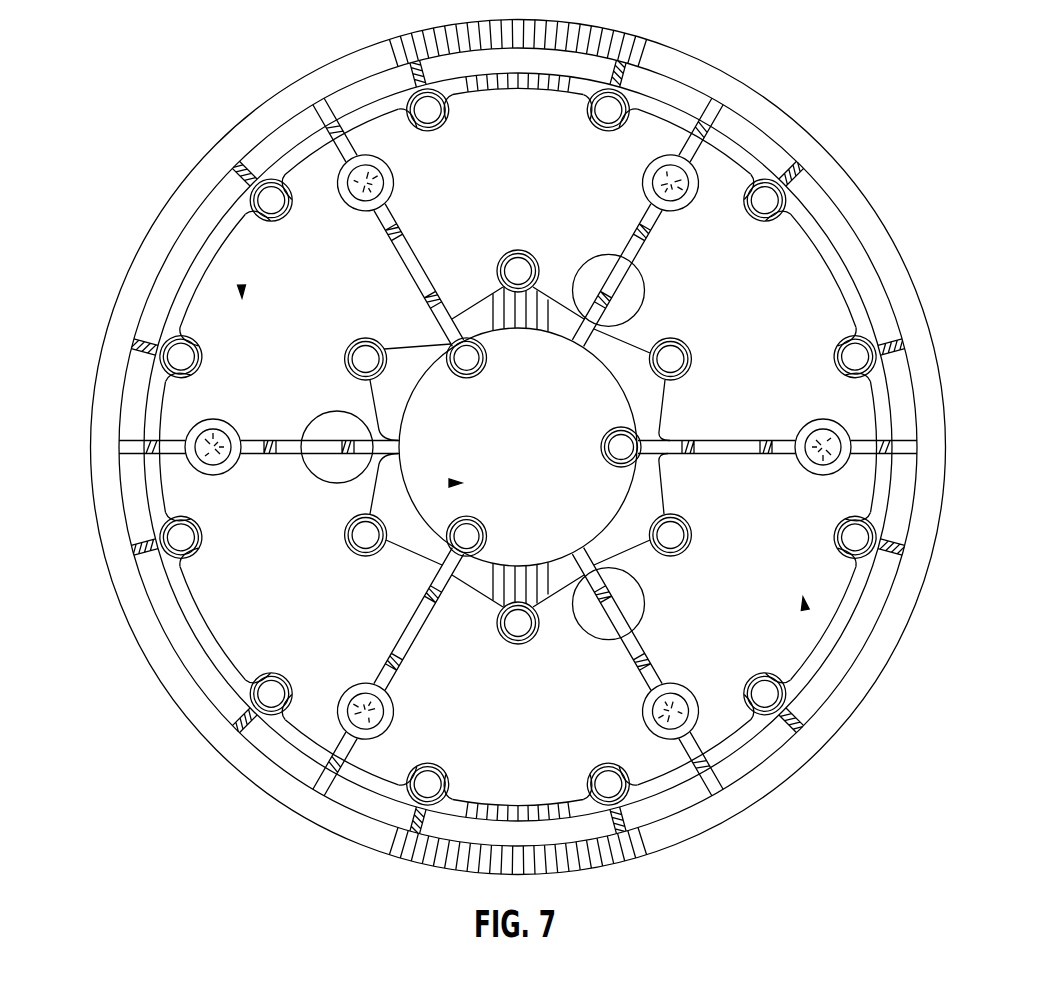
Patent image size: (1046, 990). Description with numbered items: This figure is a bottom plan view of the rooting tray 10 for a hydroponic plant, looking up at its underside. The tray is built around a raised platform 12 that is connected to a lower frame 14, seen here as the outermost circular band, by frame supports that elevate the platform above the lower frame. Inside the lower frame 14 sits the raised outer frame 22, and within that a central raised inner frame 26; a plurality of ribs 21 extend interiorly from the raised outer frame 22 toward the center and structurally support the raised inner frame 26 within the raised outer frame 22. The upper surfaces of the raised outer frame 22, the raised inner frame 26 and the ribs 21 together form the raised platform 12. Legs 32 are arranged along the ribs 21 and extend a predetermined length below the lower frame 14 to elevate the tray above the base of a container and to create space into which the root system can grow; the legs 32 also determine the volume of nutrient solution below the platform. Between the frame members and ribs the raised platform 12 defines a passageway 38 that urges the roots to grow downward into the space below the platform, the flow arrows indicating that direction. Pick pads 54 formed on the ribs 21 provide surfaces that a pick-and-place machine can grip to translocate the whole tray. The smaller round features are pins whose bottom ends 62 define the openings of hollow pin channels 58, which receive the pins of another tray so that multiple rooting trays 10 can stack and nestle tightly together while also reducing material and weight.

The rooting tray 10 is at (847, 72).
The raised platform 12 is at (143, 487).
The lower frame 14 is at (182, 715).
The rib 21 is at (402, 258).
The raised outer frame 22 is at (505, 806).
The raised inner frame 26 is at (603, 535).
The leg 32 is at (392, 170).
The passageway 38 is at (241, 286).
The pick pad 54 is at (640, 603).
The pin channel 58 is at (606, 112).
The bottom end 62 is at (588, 101).